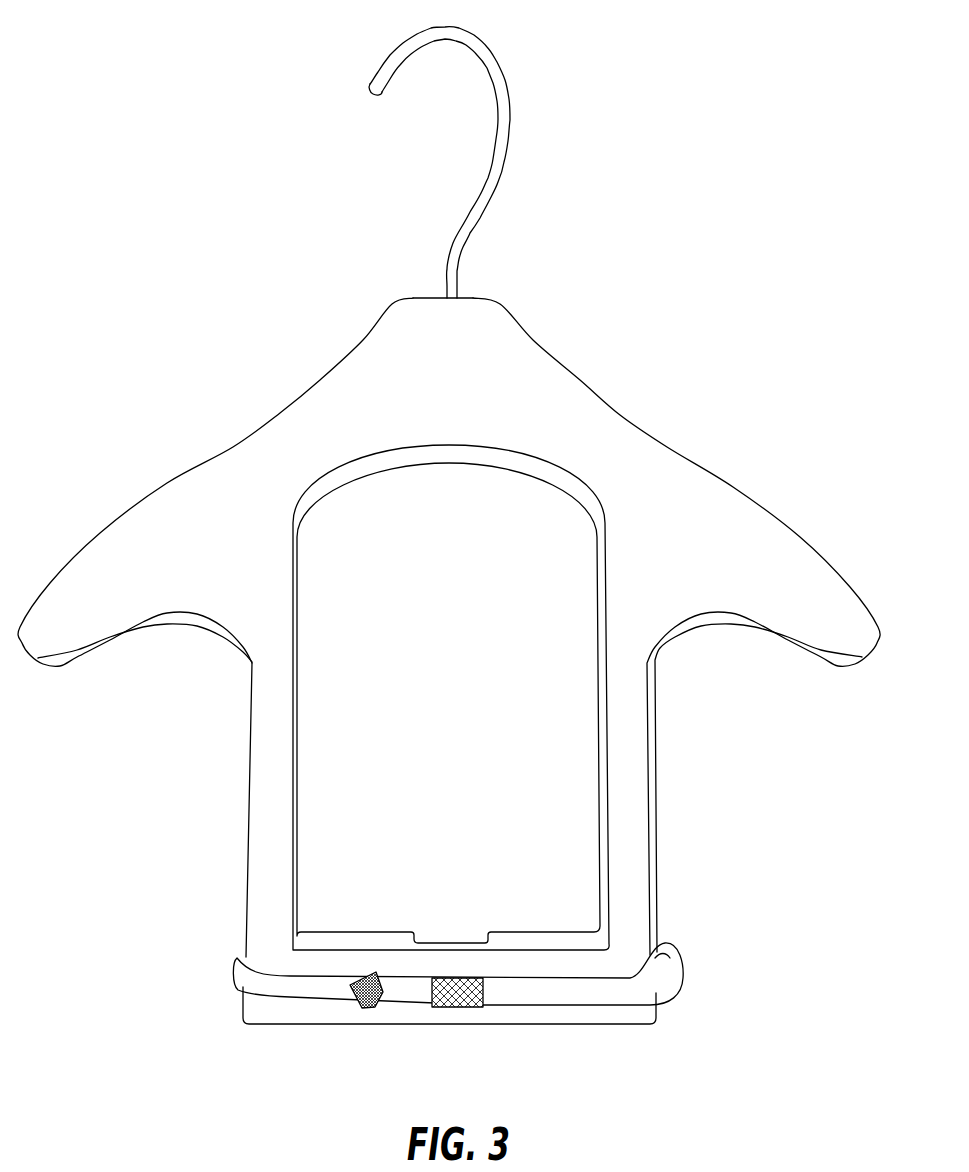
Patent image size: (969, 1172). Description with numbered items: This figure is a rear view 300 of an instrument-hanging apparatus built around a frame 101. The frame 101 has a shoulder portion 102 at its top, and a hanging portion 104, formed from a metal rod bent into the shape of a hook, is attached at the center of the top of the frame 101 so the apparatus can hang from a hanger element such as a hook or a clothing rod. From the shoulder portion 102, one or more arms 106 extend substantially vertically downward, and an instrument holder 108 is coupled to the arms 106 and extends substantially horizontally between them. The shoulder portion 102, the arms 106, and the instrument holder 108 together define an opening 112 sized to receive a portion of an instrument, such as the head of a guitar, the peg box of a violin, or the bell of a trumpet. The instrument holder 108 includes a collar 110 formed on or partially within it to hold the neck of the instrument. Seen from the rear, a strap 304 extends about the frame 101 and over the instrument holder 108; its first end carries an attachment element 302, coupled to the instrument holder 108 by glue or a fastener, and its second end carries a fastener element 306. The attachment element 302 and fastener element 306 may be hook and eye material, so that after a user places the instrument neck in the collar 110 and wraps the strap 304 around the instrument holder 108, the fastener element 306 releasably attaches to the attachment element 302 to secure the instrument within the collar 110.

The rear view 300 is at (107, 53).
The frame 101 is at (397, 400).
The shoulder portion 102 is at (100, 528).
The hanging portion 104 is at (455, 230).
The arms 106 is at (248, 772).
The instrument holder 108 is at (263, 1013).
The collar 110 is at (449, 906).
The opening 112 is at (343, 704).
The attachment element 302 is at (457, 1007).
The strap 304 is at (237, 977).
The fastener element 306 is at (365, 1010).